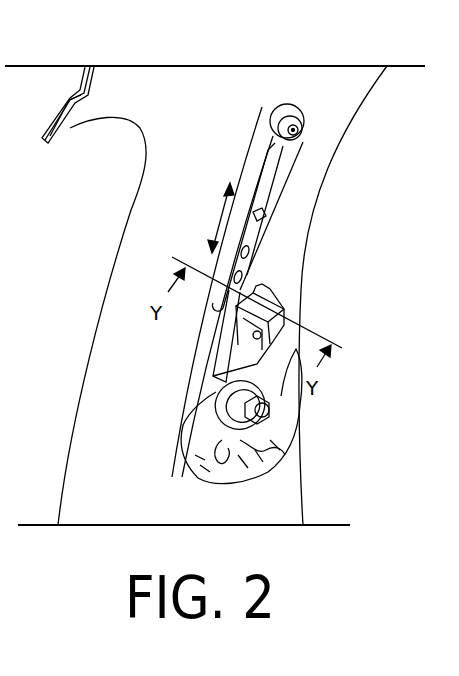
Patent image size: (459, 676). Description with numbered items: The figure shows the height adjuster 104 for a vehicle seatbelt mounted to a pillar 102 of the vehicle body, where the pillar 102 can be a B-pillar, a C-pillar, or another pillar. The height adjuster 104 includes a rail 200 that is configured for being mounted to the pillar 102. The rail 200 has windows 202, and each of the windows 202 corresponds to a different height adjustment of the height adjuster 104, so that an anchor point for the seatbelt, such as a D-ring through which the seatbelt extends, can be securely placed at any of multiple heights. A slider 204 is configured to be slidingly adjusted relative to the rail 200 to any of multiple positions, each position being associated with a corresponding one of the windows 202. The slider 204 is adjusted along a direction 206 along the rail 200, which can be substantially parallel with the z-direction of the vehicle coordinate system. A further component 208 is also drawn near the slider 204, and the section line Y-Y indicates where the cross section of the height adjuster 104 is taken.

The pillar 102 is at (328, 168).
The seat belt anchor assembly 104 is at (382, 238).
The slider bar 200 is at (283, 183).
The slots 202 is at (249, 250).
The rail 204 is at (200, 350).
The direction of adjustment 206 is at (218, 216).
The clip 208 is at (276, 303).